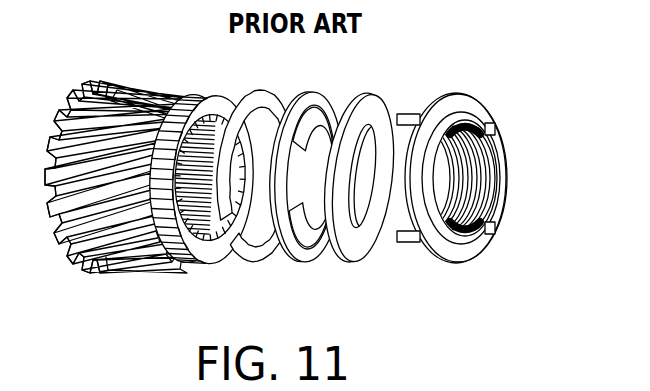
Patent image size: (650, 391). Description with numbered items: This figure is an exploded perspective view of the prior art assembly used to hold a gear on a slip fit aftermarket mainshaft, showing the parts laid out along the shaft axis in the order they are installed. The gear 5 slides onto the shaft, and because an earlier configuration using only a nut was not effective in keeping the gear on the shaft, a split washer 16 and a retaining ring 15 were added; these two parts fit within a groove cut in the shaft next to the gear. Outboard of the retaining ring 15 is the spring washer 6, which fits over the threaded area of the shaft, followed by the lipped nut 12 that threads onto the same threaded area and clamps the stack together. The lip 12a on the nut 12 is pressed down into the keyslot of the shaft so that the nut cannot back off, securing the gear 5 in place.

The gear 5 is at (45, 229).
The spring washer 6 is at (375, 243).
The lipped nut 12 is at (448, 245).
The lip 12a is at (452, 122).
The retaining ring 15 is at (315, 257).
The split washer 16 is at (252, 105).